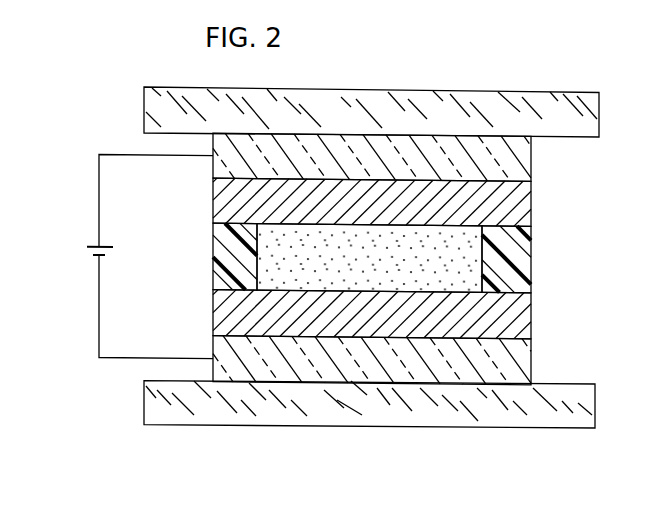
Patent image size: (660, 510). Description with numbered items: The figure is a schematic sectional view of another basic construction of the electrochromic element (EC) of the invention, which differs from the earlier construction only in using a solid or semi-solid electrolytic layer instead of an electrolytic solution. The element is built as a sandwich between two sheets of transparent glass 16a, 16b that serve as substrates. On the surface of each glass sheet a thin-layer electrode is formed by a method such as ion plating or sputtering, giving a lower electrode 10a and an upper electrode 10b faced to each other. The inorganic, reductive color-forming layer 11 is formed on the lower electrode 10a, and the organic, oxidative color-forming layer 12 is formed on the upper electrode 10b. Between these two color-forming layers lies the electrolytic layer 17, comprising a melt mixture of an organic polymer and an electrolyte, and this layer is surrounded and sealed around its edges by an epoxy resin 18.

The transparent glass 16b is at (383, 91).
The upper electrode 10b is at (533, 161).
The organic, oxidative color-forming layer 12 is at (526, 206).
The epoxy resin 18 is at (521, 259).
The electrolytic layer 17 is at (366, 227).
The inorganic, reductive color-forming layer 11 is at (523, 321).
The lower electrode 10a is at (523, 366).
The transparent glass 16a is at (374, 429).